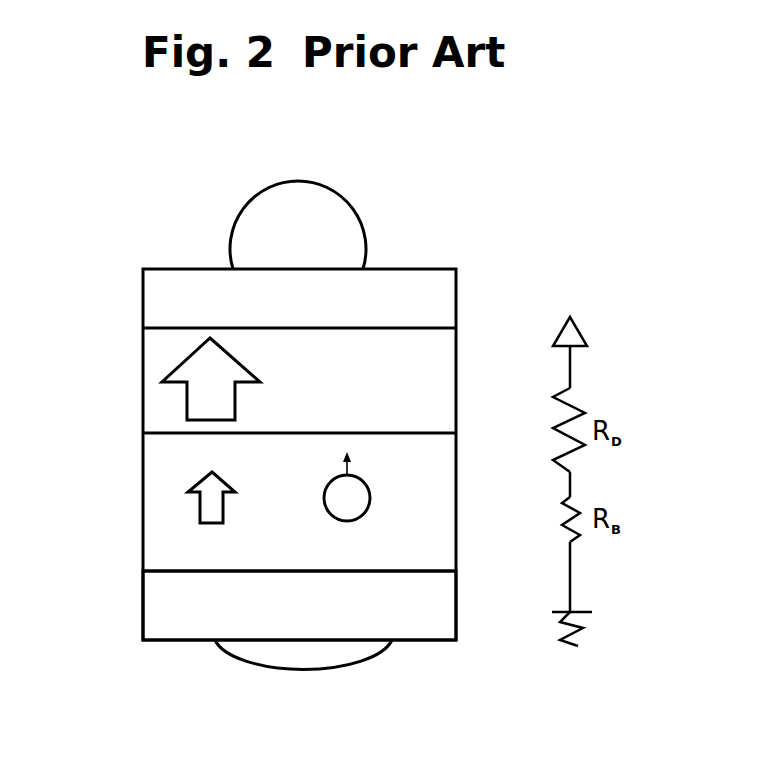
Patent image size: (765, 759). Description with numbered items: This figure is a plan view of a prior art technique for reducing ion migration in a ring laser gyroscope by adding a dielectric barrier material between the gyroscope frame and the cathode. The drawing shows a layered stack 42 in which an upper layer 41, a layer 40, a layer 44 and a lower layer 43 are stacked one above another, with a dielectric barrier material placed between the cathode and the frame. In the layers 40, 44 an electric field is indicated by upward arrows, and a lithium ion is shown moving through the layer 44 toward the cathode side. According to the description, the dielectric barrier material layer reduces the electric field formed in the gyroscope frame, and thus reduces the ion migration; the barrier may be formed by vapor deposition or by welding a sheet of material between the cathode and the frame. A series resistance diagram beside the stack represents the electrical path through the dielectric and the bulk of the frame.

The dielectric layer with electric field 40 is at (150, 364).
The upper electrode layer 41 is at (163, 327).
The prior art layered structure 42 is at (441, 280).
The lower electrode layer 43 is at (150, 571).
The lithium-containing layer 44 is at (153, 528).